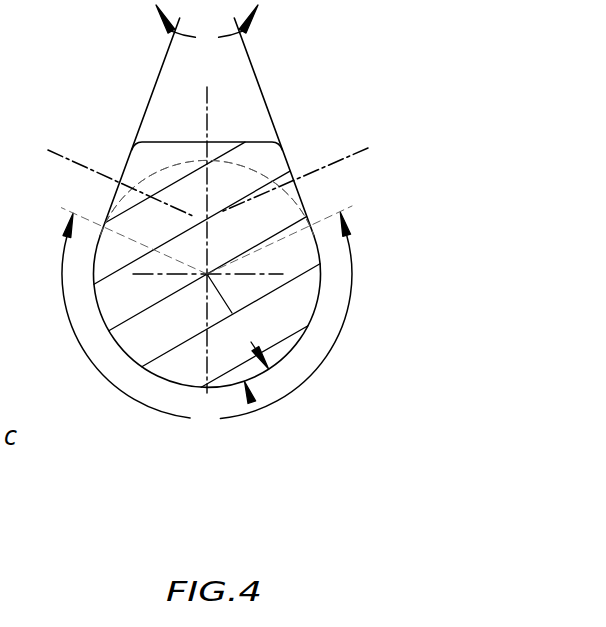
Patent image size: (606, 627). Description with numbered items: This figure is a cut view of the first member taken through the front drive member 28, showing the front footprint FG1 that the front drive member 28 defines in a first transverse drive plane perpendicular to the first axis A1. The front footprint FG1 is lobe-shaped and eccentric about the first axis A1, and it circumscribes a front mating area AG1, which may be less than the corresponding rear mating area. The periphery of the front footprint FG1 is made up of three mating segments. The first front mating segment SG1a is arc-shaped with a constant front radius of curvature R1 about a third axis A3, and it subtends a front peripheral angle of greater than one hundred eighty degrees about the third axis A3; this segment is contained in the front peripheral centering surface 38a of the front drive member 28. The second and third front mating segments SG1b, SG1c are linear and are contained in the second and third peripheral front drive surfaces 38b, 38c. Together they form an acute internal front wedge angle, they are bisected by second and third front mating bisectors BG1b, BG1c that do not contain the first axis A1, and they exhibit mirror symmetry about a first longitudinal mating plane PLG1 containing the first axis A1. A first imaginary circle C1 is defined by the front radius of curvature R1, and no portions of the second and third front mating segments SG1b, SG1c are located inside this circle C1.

The front drive member 28 is at (263, 235).
The first front mating segment SG1a is at (302, 336).
The second front mating segment SG1b is at (289, 160).
The third front mating segment SG1c is at (126, 164).
The first imaginary circle C1 is at (258, 168).
The front mating area AG1 is at (174, 235).
The first longitudinal mating plane PLG1 is at (208, 225).
The second front mating bisector BG1b is at (326, 169).
The third front mating bisector BG1c is at (96, 172).
The front peripheral centering surface 38a is at (157, 378).
The second peripheral front drive surface 38b is at (297, 184).
The third peripheral front drive surface 38c is at (118, 190).
The first axis A1 is at (197, 302).
The third axis A3 is at (207, 275).
The front radius of curvature R1 is at (238, 321).
The front footprint FG1 is at (252, 402).